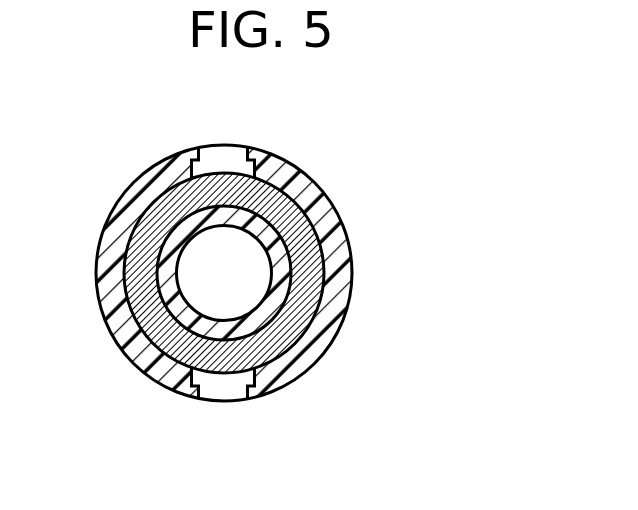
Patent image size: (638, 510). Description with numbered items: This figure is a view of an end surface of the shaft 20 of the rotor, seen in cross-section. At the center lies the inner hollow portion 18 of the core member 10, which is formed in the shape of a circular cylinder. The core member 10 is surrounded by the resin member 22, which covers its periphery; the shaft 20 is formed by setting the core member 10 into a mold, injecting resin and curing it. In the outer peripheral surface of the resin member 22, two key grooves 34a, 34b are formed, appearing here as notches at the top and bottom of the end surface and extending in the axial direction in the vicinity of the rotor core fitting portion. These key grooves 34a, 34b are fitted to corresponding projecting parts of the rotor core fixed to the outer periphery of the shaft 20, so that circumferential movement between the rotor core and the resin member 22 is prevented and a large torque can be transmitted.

The core member 10 is at (178, 163).
The inner hollow portion 18 is at (240, 285).
The shaft 20 is at (294, 271).
The resin member 22 is at (262, 165).
The key groove 34a is at (214, 160).
The key groove 34b is at (214, 388).